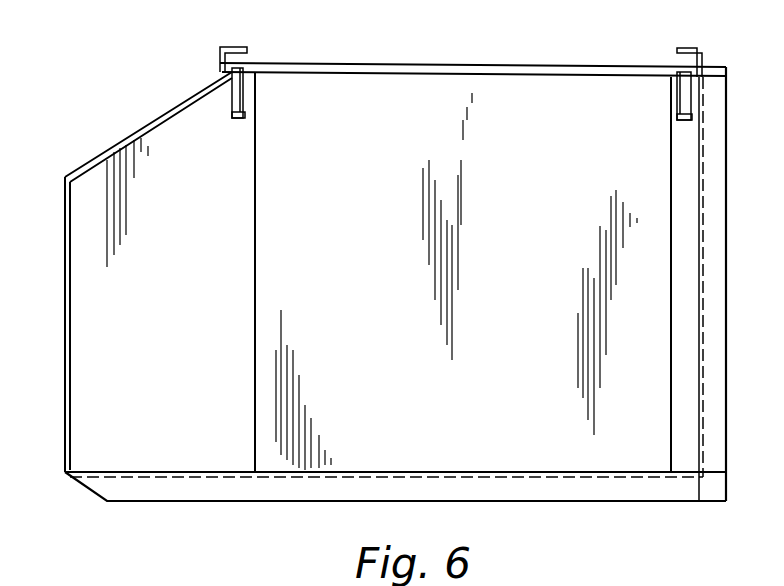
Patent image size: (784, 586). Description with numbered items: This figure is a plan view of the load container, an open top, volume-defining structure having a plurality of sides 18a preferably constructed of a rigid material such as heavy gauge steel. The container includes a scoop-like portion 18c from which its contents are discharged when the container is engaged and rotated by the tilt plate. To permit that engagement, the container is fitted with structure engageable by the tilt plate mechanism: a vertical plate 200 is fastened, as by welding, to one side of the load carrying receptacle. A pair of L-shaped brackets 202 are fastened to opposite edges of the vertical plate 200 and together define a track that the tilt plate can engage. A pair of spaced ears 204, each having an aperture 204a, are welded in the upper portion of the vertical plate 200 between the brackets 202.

The sides 18a is at (114, 147).
The scoop-like portion 18c is at (64, 317).
The plate 200 is at (383, 64).
The L-shaped brackets 202 is at (234, 46).
The ears 204 is at (240, 119).
The apertures 204a is at (243, 110).